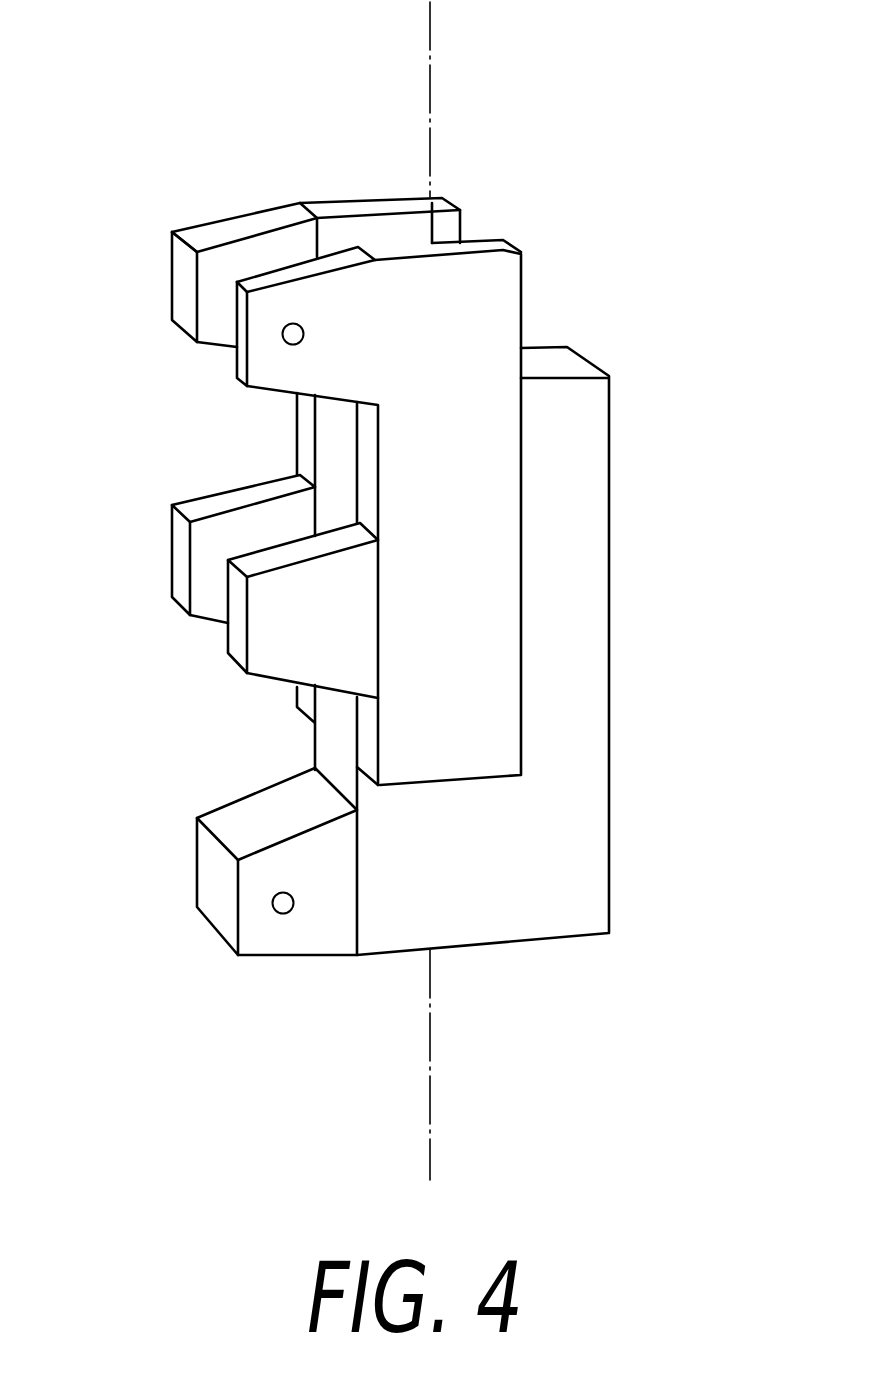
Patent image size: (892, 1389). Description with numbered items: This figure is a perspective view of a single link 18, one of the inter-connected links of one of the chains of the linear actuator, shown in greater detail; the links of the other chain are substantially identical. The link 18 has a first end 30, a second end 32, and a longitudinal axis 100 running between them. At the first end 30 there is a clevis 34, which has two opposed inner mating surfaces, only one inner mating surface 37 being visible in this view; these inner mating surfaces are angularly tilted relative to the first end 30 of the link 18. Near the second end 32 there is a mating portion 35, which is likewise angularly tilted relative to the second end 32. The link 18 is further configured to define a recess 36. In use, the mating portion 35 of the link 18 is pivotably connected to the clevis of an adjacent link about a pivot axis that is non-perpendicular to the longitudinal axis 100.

The link 18 is at (690, 345).
The first end 30 is at (507, 242).
The second end 32 is at (533, 942).
The clevis 34 is at (258, 188).
The mating portion 35 is at (313, 928).
The recess 36 is at (222, 728).
The inner mating surface 37 is at (218, 275).
The longitudinal axis 100 is at (430, 18).